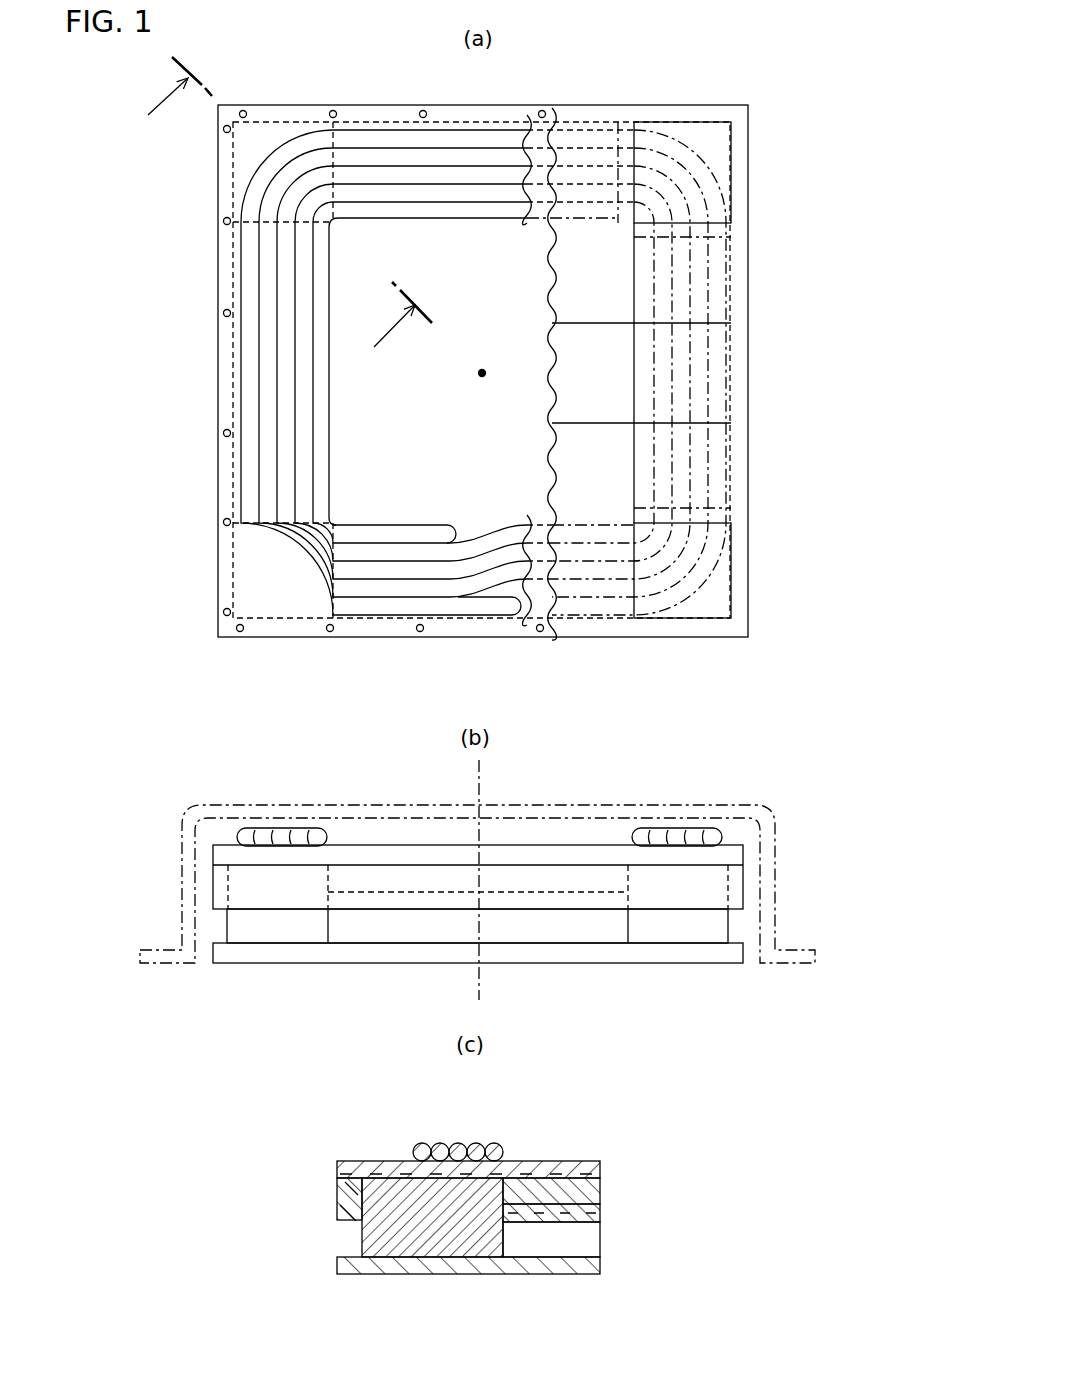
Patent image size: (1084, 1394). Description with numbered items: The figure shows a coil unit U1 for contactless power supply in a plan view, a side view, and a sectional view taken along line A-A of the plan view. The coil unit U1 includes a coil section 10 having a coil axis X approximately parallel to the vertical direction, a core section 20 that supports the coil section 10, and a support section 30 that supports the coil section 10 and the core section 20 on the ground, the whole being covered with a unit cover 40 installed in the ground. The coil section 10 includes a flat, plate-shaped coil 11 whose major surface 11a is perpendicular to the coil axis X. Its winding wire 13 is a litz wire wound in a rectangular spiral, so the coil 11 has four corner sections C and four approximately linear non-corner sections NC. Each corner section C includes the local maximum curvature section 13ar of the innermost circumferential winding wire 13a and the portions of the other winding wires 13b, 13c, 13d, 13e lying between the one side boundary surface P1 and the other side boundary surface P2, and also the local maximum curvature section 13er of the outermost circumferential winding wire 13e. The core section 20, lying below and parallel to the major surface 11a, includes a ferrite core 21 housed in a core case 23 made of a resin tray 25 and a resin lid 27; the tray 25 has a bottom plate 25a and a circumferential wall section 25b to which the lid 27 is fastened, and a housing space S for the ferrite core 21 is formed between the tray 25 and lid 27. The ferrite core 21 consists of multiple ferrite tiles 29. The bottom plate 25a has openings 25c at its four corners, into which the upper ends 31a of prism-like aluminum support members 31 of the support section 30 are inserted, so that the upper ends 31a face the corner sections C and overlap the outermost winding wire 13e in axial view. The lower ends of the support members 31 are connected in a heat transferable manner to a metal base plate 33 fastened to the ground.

The coil section 10 is at (235, 468).
The coil 11 is at (445, 135).
The major surface 11a is at (555, 852).
The winding wire 13 is at (420, 645).
The innermost circumferential winding wire 13a is at (318, 330).
The winding wire 13b is at (302, 350).
The winding wire 13c is at (285, 372).
The winding wire 13d is at (268, 395).
The outermost circumferential winding wire 13e is at (157, 322).
The local maximum curvature section 13er is at (333, 138).
The local maximum curvature section 13ar is at (345, 232).
The core section 20 is at (218, 567).
The ferrite core 21 is at (588, 905).
The core case 23 is at (813, 840).
The tray 25 is at (745, 890).
The bottom plate 25a is at (510, 912).
The circumferential wall section 25b is at (731, 412).
The opening 25c is at (328, 900).
The lid 27 is at (745, 850).
The ferrite tile 29 is at (578, 125).
The support section 30 is at (233, 597).
The support member 31 is at (268, 122).
The upper end 31a is at (240, 857).
The base plate 33 is at (740, 964).
The unit cover 40 is at (780, 812).
The coil unit U1 is at (170, 200).
The line A- A is at (280, 214).
The corner section C is at (298, 130).
The non-corner section NC is at (400, 128).
The one side boundary surface P1 is at (622, 128).
The other side boundary surface P2 is at (345, 138).
The housing space S is at (563, 895).
The coil axis X is at (486, 373).